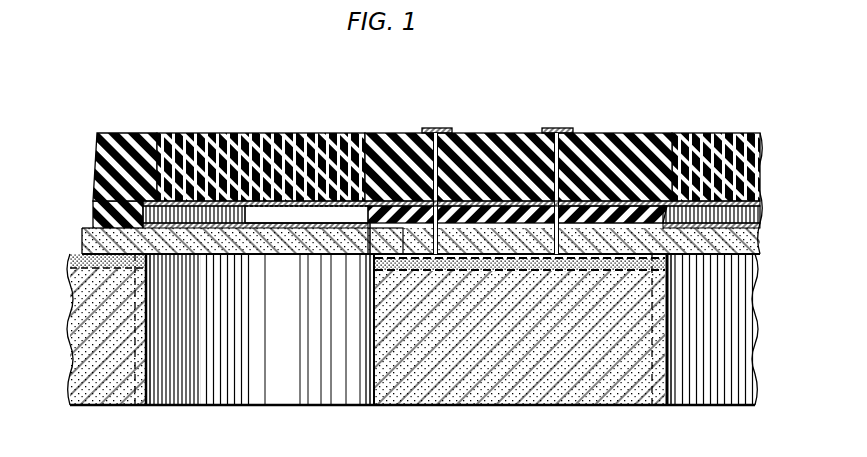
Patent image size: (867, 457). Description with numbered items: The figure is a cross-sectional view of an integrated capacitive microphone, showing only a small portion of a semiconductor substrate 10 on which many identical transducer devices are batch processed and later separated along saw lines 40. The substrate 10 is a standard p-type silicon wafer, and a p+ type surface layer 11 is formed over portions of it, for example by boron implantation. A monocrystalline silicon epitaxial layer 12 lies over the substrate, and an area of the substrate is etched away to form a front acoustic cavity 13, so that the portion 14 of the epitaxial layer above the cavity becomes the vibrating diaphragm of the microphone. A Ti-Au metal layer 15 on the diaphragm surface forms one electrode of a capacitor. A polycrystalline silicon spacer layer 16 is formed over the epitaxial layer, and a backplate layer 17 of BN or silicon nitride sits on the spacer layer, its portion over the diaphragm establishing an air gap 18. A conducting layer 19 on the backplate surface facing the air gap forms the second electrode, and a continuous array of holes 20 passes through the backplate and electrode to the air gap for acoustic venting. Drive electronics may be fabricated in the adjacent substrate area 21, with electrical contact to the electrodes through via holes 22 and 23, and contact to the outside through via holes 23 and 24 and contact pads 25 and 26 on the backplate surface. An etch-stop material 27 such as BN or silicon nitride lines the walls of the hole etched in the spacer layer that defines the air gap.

The semiconductor substrate 10 is at (77, 341).
The surface layer 11 is at (74, 260).
The epitaxial layer 12 is at (743, 242).
The front acoustic cavity 13 is at (316, 405).
The diaphragm 14 is at (334, 225).
The metal layer 15 is at (294, 224).
The spacer layer 16 is at (93, 209).
The backplate layer 17 is at (129, 140).
The air gap 18 is at (277, 224).
The conducting layer 19 is at (234, 207).
The array of holes 20 is at (336, 133).
The adjacent area of the semiconductor substrate 21 is at (665, 262).
The via hole 22 is at (378, 258).
The via hole 23 is at (457, 146).
The via hole 24 is at (570, 156).
The contact pad 25 is at (436, 128).
The contact pad 26 is at (552, 132).
The etch-stop material 27 is at (140, 226).
The saw lines 40 is at (130, 402).